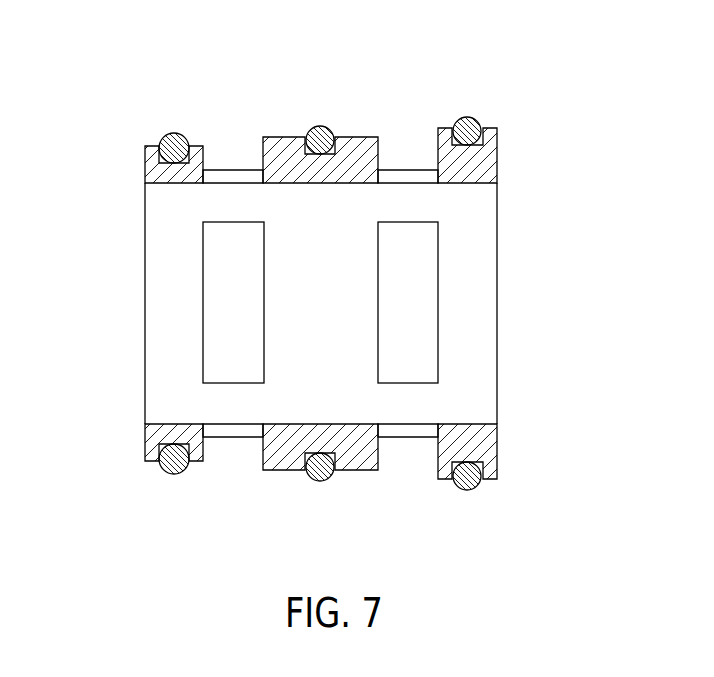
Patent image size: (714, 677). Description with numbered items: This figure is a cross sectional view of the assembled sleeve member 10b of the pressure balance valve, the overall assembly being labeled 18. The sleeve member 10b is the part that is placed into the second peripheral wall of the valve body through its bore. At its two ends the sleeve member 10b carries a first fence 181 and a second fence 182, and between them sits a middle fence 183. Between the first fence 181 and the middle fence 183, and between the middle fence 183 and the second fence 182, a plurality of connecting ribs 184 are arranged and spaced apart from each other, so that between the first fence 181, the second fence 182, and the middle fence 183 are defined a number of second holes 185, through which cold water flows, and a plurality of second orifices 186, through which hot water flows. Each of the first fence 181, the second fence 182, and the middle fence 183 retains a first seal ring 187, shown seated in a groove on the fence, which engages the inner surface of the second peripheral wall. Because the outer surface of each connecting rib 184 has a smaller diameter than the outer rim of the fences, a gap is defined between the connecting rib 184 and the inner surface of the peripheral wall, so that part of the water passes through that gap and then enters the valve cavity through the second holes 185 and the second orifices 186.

The bearing assembly 18 is at (145, 440).
The sleeve member 10b is at (497, 151).
The first fence 181 is at (149, 146).
The second fence 182 is at (489, 128).
The middle fence 183 is at (282, 137).
The connecting rib 184 is at (231, 174).
The second hole 185 is at (217, 303).
The second orifice 186 is at (423, 308).
The first seal ring 187 is at (173, 137).